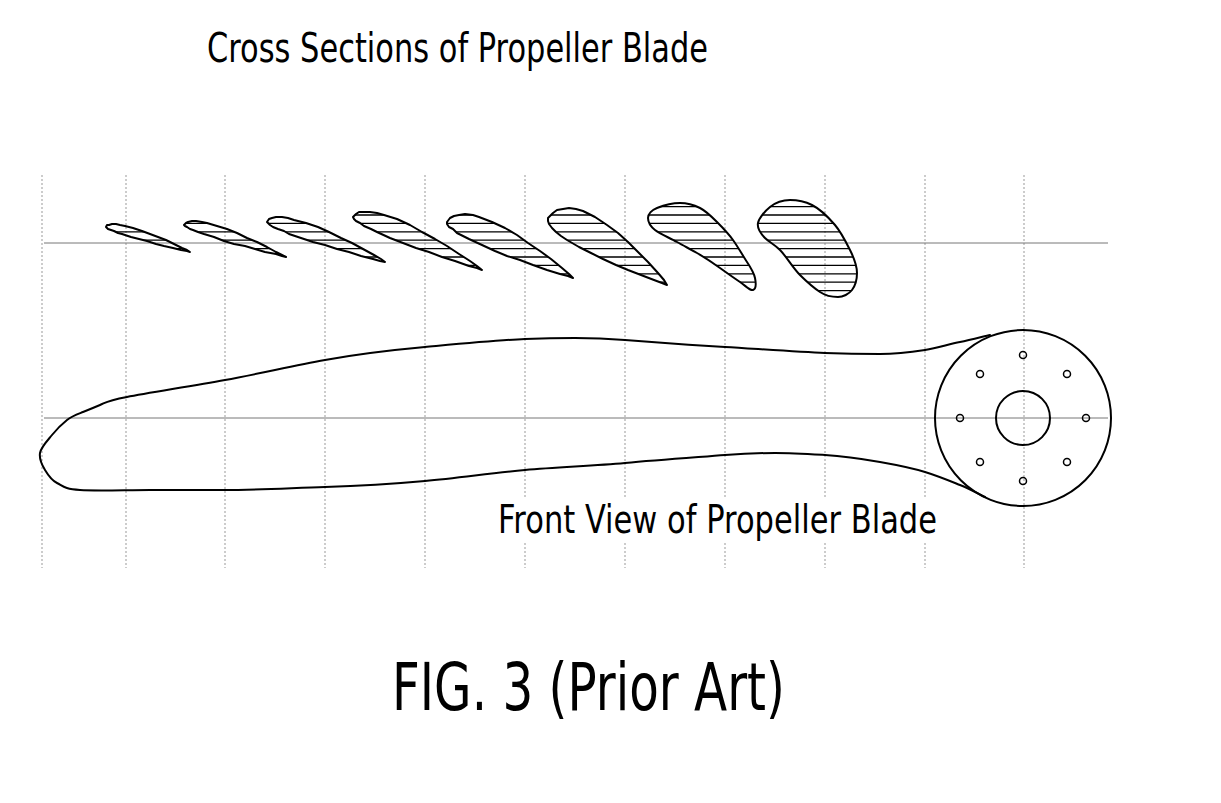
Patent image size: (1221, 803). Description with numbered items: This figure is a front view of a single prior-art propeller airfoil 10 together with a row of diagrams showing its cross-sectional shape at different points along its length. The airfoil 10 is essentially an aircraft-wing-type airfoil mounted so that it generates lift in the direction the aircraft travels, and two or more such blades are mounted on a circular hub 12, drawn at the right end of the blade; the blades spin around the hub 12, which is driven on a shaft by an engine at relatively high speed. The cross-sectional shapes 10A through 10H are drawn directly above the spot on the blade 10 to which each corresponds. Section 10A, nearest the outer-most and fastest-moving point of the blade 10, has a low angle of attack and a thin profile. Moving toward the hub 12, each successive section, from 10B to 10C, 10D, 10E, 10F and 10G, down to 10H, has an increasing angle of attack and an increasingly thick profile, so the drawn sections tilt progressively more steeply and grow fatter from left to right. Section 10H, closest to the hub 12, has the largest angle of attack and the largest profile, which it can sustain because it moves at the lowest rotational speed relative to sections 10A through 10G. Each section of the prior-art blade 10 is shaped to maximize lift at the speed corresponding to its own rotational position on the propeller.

The airfoil 10 is at (195, 467).
The circular hub 12 is at (1080, 400).
The cross-sectional shape 10A is at (137, 233).
The cross-sectional shape 10B is at (217, 224).
The cross-sectional shape 10C is at (283, 225).
The cross-sectional shape 10D is at (383, 217).
The cross-sectional shape 10E is at (472, 218).
The cross-sectional shape 10F is at (593, 223).
The cross-sectional shape 10G is at (697, 217).
The cross-sectional shape 10H is at (797, 217).